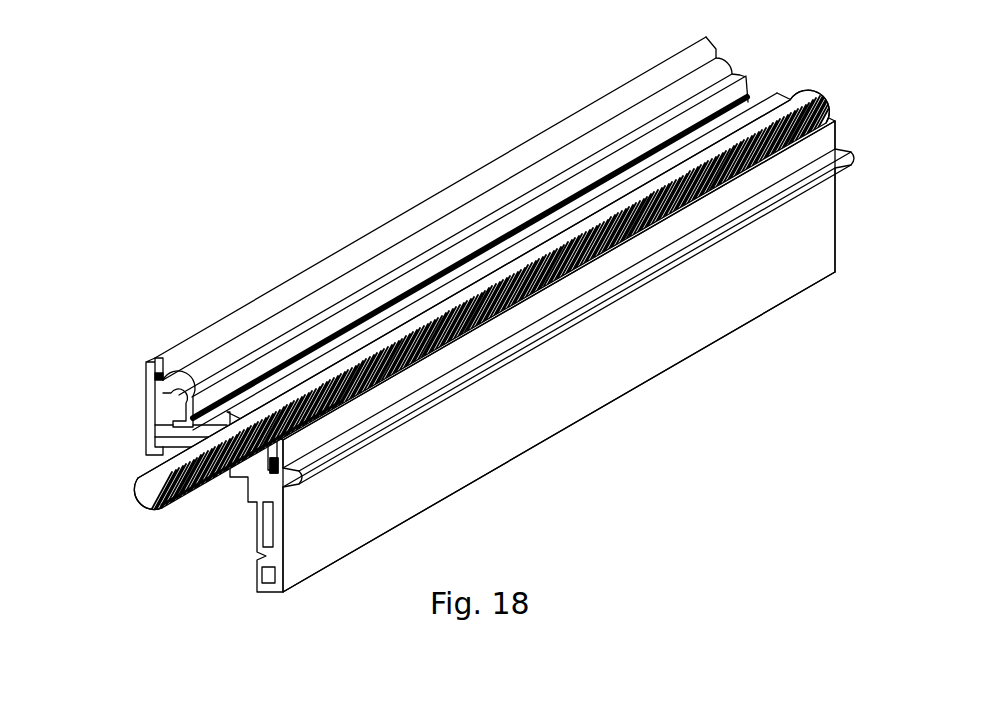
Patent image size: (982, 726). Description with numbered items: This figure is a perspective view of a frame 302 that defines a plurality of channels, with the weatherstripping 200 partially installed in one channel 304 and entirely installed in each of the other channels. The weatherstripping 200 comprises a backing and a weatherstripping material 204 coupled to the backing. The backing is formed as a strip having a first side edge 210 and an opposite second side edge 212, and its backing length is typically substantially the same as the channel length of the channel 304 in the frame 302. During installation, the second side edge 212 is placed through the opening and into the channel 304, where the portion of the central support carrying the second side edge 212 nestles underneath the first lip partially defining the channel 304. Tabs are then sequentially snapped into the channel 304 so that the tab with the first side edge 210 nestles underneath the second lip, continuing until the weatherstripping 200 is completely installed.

The weatherstripping 200 is at (445, 356).
The weatherstripping material 204 is at (400, 330).
The first side edge 210 is at (154, 454).
The second side edge 212 is at (176, 497).
The frame 302 is at (806, 316).
The channel 304 is at (268, 453).